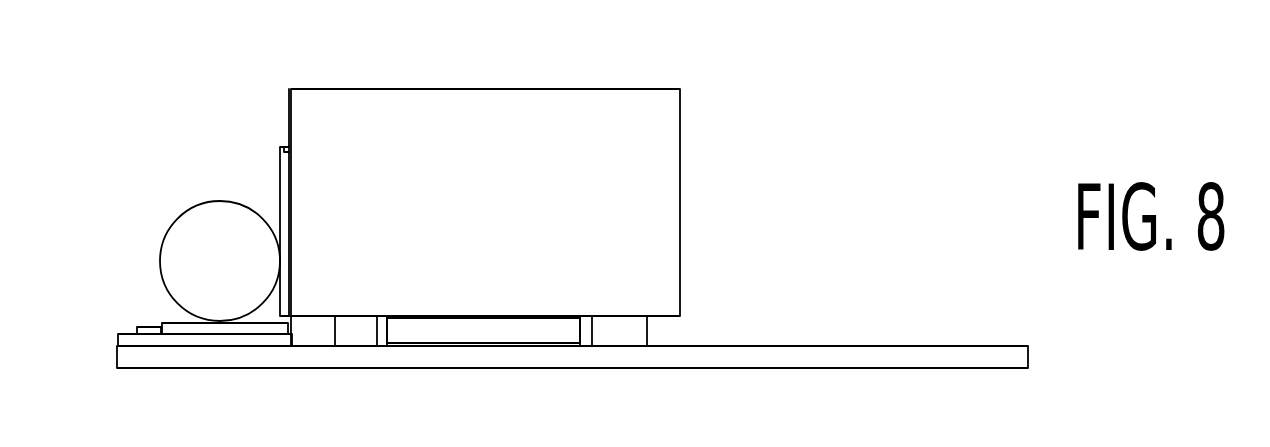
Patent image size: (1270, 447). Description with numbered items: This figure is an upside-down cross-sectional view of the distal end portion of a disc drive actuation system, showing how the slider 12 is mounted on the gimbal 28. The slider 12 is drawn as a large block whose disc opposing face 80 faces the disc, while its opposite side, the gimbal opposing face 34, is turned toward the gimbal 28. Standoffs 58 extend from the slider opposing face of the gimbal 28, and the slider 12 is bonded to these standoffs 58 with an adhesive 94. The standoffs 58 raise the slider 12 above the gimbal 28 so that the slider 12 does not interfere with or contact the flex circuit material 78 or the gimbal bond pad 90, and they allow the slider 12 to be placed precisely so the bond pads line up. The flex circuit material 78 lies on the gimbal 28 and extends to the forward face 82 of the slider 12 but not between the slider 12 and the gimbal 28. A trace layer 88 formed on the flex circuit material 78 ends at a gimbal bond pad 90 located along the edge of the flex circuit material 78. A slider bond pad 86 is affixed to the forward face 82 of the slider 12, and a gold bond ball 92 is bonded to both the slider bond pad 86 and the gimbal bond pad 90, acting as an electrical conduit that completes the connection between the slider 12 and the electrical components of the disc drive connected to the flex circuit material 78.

The slider 12 is at (507, 187).
The gimbal 28 is at (720, 365).
The gimbal opposing face 34 is at (458, 317).
The standoffs 58 is at (382, 332).
The flex circuit material 78 is at (125, 339).
The disc opposing face 80 is at (403, 91).
The forward face 82 is at (289, 101).
The slider bond pad 86 is at (286, 150).
The trace layer 88 is at (145, 328).
The gimbal bond pad 90 is at (175, 327).
The gold bond ball 92 is at (208, 225).
The adhesive 94 is at (527, 332).